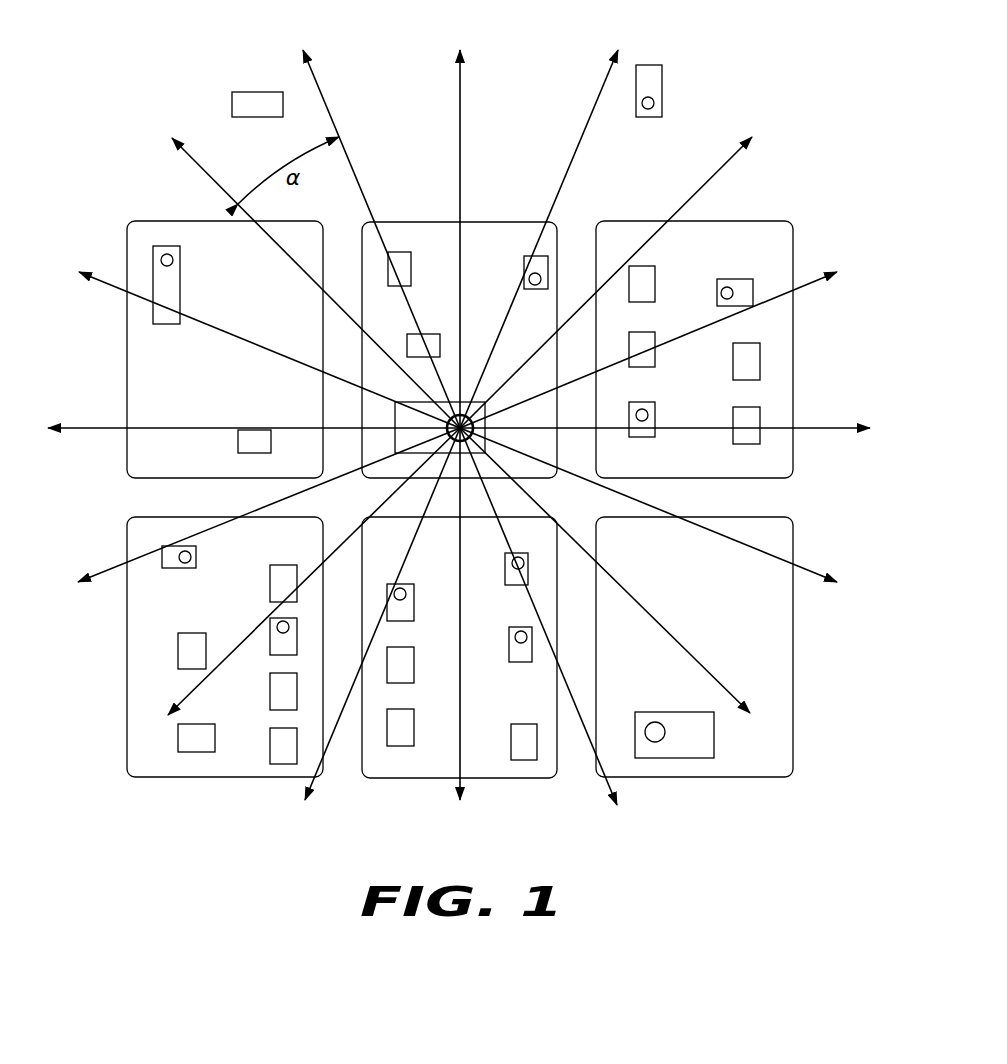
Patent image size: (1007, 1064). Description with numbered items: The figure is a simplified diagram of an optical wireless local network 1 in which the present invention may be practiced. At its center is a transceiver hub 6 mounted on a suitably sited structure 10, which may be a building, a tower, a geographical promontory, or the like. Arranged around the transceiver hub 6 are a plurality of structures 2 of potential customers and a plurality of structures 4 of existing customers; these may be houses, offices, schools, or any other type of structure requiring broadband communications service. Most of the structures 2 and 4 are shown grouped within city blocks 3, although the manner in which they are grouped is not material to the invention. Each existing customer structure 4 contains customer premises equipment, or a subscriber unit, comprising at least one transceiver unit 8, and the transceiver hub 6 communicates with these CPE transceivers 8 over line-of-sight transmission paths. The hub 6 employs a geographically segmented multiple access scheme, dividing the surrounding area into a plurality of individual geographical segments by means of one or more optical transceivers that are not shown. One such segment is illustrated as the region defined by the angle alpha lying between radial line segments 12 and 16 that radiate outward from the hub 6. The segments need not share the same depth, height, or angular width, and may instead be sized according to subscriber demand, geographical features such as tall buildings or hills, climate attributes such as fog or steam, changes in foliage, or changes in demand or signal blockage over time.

The optical wireless local network 1 is at (632, 868).
The structures of potential customers 2 is at (258, 92).
The city blocks 3 is at (507, 220).
The structures of existing customers 4 is at (664, 78).
The transceiver hub 6 is at (485, 425).
The transceiver unit 8 is at (648, 110).
The suitably sited structure 10 is at (393, 415).
The radial line segment 12 is at (193, 160).
The radial line segment 16 is at (316, 80).